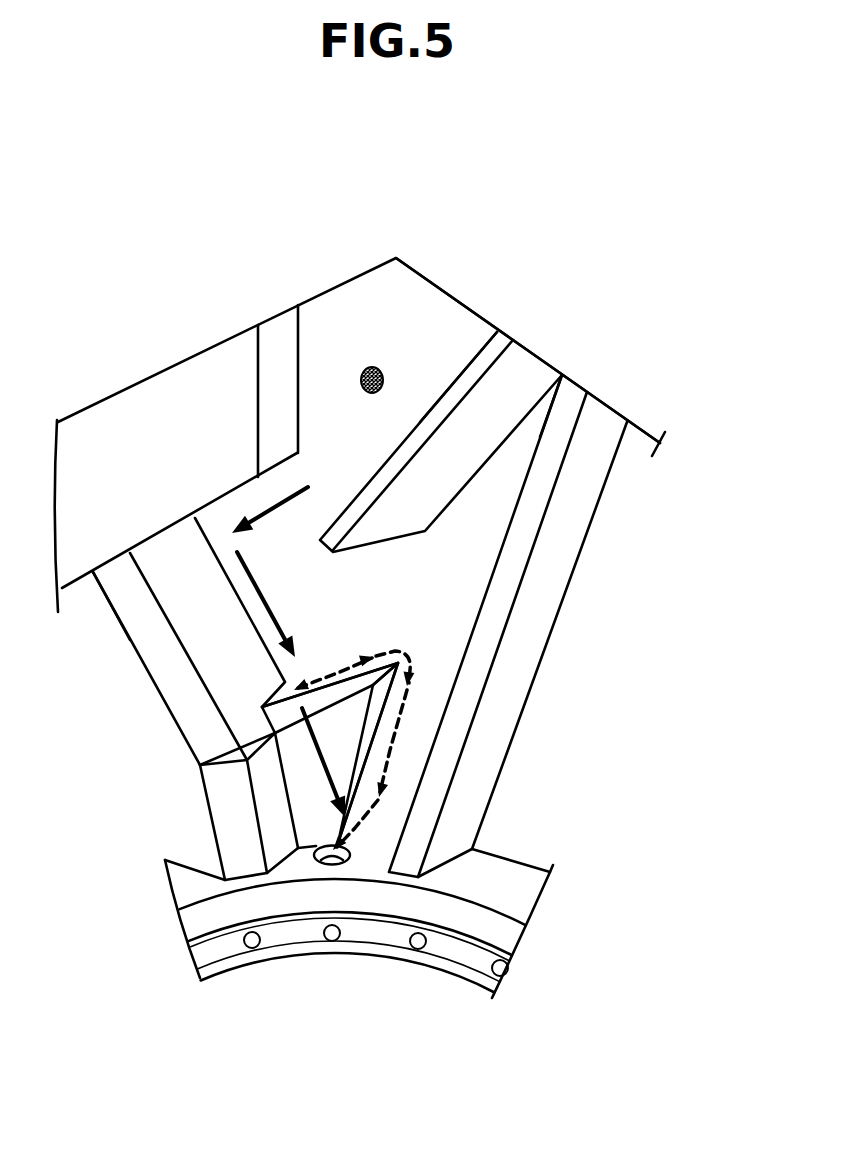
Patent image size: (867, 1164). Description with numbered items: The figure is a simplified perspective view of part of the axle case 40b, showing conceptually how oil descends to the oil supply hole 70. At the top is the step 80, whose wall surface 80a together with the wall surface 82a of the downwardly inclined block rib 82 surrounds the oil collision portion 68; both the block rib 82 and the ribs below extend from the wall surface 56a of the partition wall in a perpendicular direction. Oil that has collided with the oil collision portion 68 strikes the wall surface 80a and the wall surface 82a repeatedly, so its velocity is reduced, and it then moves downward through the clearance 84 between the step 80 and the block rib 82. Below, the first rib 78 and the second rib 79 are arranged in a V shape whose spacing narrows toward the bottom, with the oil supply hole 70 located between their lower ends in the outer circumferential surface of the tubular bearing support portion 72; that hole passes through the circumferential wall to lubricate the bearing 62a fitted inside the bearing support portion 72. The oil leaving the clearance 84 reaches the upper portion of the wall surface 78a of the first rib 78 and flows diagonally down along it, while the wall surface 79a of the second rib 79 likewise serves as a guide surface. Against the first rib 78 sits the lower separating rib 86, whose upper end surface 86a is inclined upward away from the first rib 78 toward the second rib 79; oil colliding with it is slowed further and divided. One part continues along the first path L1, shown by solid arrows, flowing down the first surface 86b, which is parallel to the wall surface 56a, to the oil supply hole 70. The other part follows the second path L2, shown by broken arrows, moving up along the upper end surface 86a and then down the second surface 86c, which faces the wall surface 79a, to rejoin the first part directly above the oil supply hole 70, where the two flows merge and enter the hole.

The axle case 40b is at (594, 370).
The wall surface of the partition wall 56a is at (397, 573).
The bearing 62a is at (278, 966).
The oil collision portion 68 is at (352, 368).
The oil supply hole 70 is at (352, 864).
The bearing support portion 72 is at (202, 923).
The first rib 78 is at (138, 672).
The wall surface of the first rib 78a is at (180, 603).
The second rib 79 is at (540, 702).
The wall surface of the second rib 79a is at (458, 657).
The step 80 is at (387, 253).
The wall surface of the step 80a is at (451, 305).
The block rib 82 is at (504, 469).
The wall surface of the block rib 82a is at (463, 383).
The clearance 84 is at (320, 470).
The separating rib 86 is at (259, 736).
The upper end surface of the separating rib 86a is at (347, 687).
The first surface of the separating rib 86b is at (300, 750).
The second surface of the separating rib 86c is at (370, 765).
The first path L1 is at (320, 773).
The second path L2 is at (395, 738).